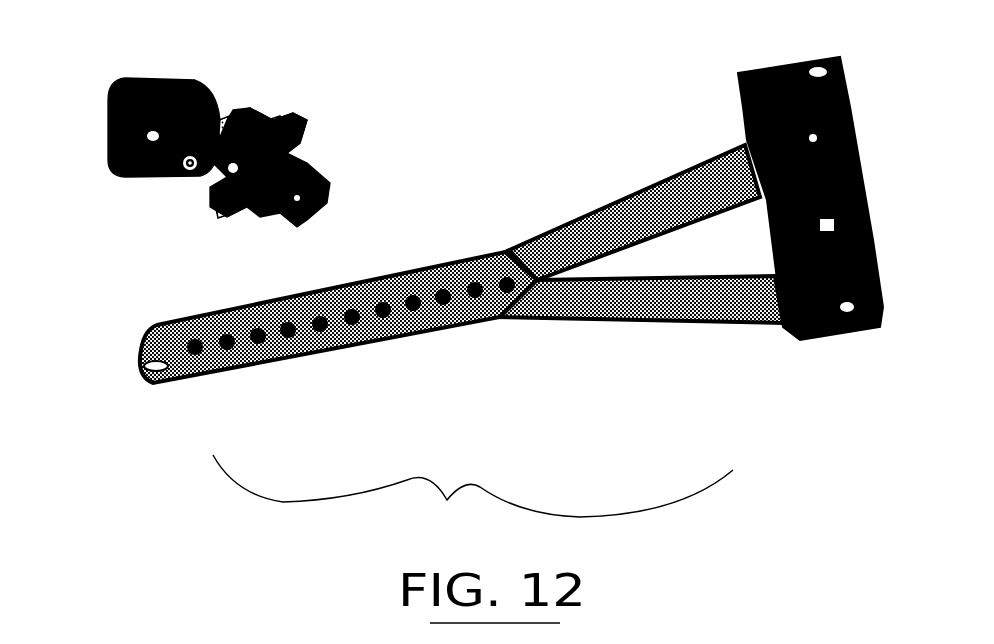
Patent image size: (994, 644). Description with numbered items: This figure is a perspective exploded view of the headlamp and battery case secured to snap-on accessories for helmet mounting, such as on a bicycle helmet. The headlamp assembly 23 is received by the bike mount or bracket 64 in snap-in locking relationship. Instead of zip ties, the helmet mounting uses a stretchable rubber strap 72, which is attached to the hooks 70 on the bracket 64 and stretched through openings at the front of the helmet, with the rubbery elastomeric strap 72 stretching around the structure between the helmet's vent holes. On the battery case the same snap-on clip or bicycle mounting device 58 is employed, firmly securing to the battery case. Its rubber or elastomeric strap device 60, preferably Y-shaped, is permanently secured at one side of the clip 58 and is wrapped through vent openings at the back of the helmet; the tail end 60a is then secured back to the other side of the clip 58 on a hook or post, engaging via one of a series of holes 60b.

The headlamp assembly 23 is at (103, 77).
The bicycle battery case clip 58 is at (799, 314).
The elastic strap device 60 is at (598, 312).
The tail end 60a is at (311, 350).
The series of holes 60b is at (393, 294).
The bike mount or bracket 64 is at (291, 117).
The hooks 70 is at (197, 176).
The stretchable rubber strap 72 is at (316, 172).